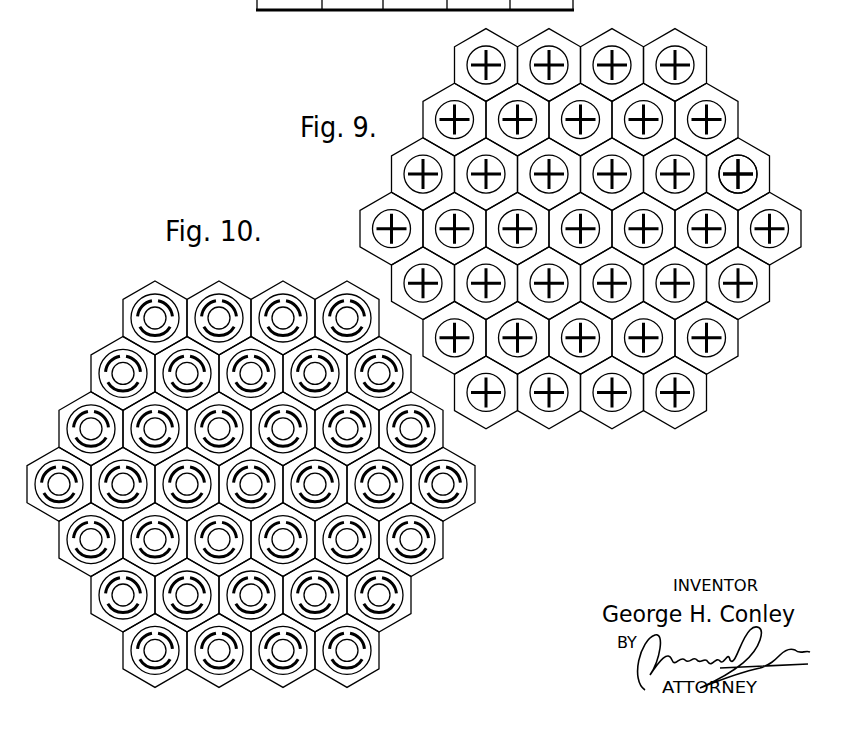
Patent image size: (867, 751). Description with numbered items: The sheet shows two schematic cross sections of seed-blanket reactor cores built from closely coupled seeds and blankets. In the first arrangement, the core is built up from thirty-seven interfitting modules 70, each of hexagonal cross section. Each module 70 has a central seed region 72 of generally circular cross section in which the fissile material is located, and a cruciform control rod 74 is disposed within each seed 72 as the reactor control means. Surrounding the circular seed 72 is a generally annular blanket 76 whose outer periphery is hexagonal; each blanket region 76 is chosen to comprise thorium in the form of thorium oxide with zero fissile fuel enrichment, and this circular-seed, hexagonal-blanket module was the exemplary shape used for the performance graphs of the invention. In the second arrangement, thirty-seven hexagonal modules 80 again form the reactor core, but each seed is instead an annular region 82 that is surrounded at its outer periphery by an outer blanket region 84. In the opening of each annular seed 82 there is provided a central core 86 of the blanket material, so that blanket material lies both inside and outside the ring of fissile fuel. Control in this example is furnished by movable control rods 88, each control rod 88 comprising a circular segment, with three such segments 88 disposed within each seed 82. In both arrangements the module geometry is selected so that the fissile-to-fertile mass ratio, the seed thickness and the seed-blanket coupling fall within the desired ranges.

In FIG. 9, the hexagonal module 70 is at (653, 39).
In FIG. 9, the central seed region 72 is at (713, 107).
In FIG. 9, the cruciform control rod 74 is at (765, 217).
In FIG. 9, the annular blanket 76 is at (743, 147).
In FIG. 10, the hexagonal module 80 is at (198, 297).
In FIG. 10, the annular seed region 82 is at (287, 315).
In FIG. 10, the outer blanket region 84 is at (255, 288).
In FIG. 10, the central core 86 is at (343, 313).
In FIG. 10, the control rod 88 is at (162, 337).